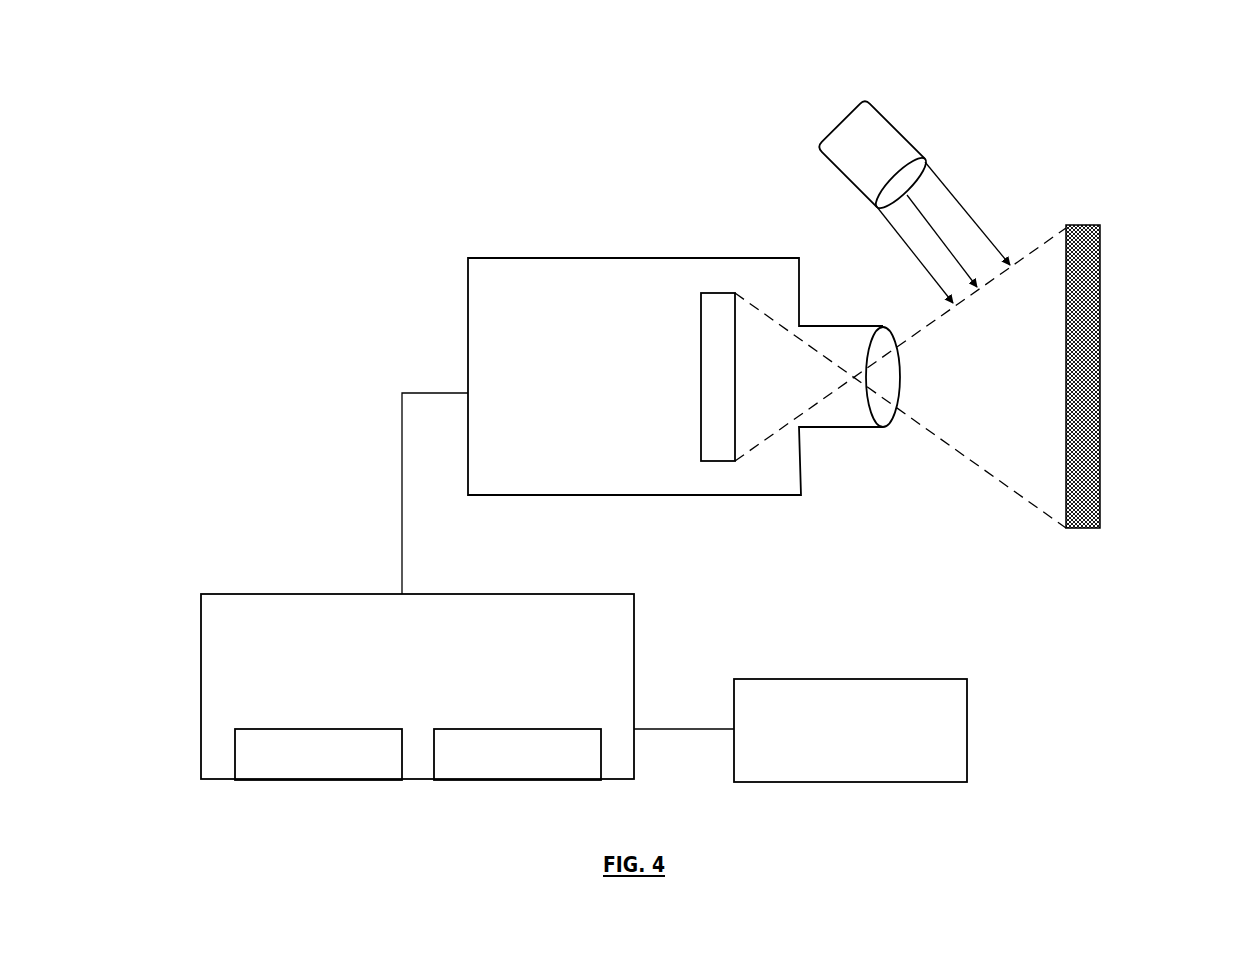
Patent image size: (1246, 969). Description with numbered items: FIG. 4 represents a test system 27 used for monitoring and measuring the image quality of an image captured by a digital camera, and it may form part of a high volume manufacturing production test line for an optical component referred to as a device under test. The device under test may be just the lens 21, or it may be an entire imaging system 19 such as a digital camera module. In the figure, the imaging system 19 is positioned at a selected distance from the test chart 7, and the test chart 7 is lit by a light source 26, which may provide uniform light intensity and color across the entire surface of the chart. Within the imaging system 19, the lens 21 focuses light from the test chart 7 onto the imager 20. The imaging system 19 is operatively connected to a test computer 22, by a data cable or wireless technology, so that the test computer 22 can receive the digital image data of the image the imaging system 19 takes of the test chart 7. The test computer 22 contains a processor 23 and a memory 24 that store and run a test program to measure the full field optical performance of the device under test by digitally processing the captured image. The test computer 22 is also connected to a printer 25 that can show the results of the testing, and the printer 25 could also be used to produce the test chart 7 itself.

The test chart 7 is at (1101, 375).
The imaging system 19 is at (467, 300).
The imager 20 is at (717, 461).
The lens 21 is at (881, 328).
The test computer 22 is at (283, 593).
The processor 23 is at (317, 782).
The memory 24 is at (517, 783).
The printer 25 is at (853, 678).
The light source 26 is at (893, 127).
The test system 27 is at (1096, 82).